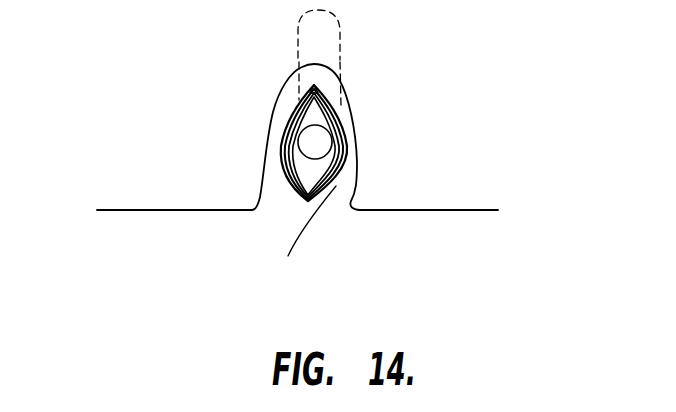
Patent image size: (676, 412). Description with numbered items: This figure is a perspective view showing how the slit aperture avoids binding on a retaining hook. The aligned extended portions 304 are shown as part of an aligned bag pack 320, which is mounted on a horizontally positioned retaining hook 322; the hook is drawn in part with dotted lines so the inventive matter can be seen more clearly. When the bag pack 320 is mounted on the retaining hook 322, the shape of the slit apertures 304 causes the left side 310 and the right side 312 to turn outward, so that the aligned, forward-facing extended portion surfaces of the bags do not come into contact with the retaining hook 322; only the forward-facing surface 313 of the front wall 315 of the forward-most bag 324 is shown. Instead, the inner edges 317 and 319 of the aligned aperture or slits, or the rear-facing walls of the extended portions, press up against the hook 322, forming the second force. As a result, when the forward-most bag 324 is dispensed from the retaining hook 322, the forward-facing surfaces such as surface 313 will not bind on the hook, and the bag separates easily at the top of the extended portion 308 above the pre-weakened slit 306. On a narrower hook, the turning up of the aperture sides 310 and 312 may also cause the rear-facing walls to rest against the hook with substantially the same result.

The aligned extended portions 304 is at (283, 112).
The pre-weakened slit 306 is at (318, 84).
The extended portion 308 is at (343, 26).
The left side 310 is at (274, 166).
The right side 312 is at (358, 148).
The forward-facing surface 313 is at (285, 186).
The front wall 315 is at (342, 323).
The inner edge 317 is at (303, 144).
The inner edge 319 is at (347, 110).
The bag pack 320 is at (476, 209).
The retaining hook 322 is at (300, 44).
The forward-most bag 324 is at (178, 245).